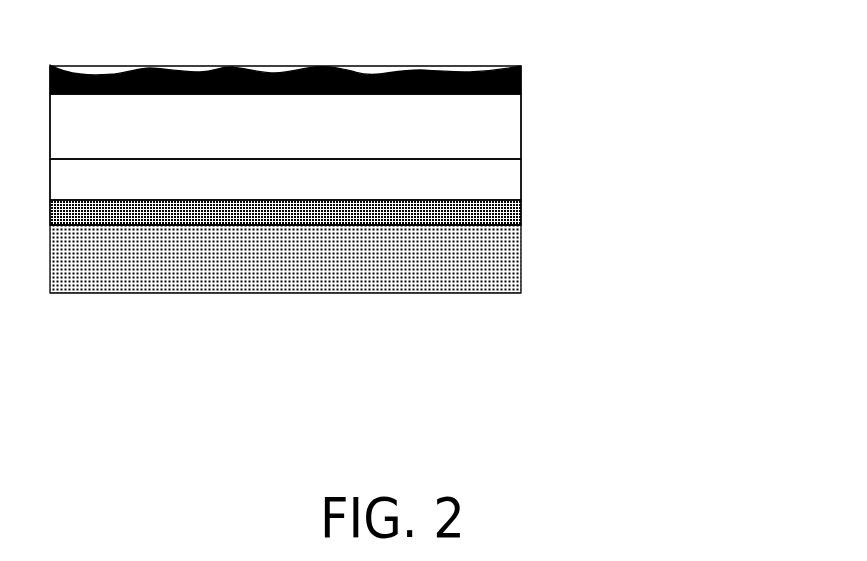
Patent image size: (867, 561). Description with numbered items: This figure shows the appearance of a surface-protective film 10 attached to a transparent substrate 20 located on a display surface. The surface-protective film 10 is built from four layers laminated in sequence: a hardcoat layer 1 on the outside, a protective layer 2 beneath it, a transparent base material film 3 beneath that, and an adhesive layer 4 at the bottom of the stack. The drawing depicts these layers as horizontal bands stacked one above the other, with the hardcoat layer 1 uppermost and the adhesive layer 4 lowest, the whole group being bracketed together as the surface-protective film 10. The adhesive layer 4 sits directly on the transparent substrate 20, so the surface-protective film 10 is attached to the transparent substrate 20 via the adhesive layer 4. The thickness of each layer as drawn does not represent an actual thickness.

The surface-protective film 10 is at (699, 53).
The hardcoat layer 1 is at (521, 70).
The protective layer 2 is at (503, 125).
The transparent base material film 3 is at (503, 175).
The adhesive layer 4 is at (503, 222).
The transparent substrate 20 is at (503, 275).